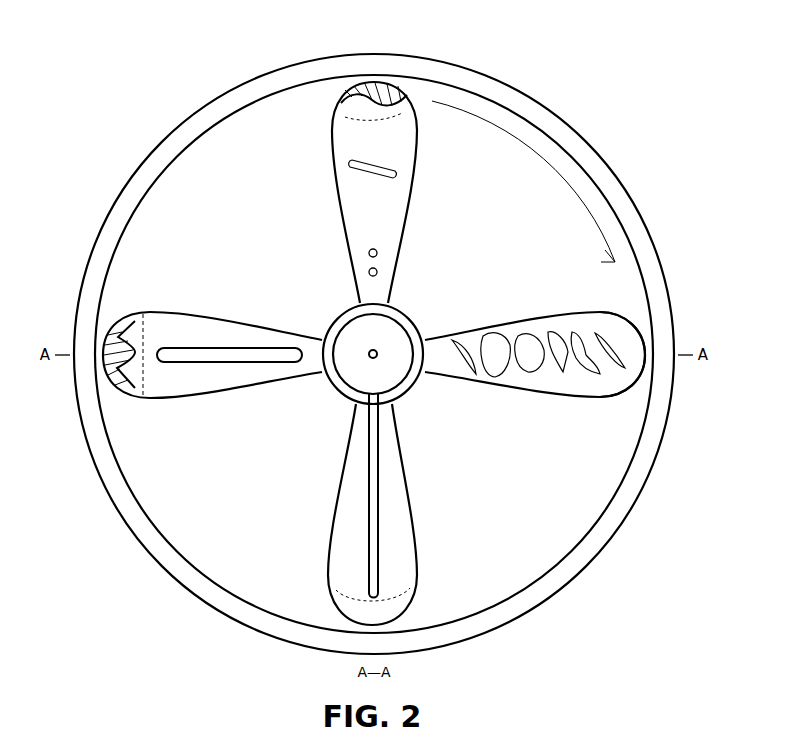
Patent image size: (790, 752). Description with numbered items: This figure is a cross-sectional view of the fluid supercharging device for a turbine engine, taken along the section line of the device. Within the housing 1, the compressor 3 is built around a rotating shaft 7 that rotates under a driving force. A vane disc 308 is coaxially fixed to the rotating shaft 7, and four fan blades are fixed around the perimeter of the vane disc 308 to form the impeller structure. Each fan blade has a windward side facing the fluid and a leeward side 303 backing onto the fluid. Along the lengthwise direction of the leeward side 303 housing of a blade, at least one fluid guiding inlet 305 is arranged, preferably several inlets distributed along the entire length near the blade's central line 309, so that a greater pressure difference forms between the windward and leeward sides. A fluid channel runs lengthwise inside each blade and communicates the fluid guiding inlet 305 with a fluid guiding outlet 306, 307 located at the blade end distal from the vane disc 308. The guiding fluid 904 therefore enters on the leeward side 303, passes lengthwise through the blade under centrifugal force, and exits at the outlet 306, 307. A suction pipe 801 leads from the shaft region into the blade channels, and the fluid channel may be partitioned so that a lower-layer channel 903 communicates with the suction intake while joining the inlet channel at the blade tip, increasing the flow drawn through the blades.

The housing 1 is at (638, 210).
The compressor 3 is at (597, 312).
The rotating shaft 7 is at (374, 336).
The leeward side 303 is at (627, 350).
The fluid guiding inlet 305 is at (389, 168).
The fluid guiding outlet 306 is at (132, 332).
The fluid guiding outlet 307 is at (352, 108).
The vane disc 308 is at (404, 320).
The central line 309 is at (603, 343).
The suction pipe 801 is at (369, 359).
The lower-layer channel 903 is at (397, 613).
The guiding fluid 904 is at (363, 93).